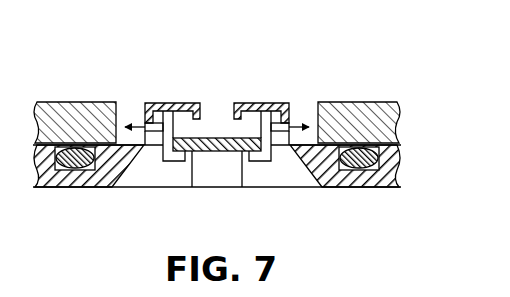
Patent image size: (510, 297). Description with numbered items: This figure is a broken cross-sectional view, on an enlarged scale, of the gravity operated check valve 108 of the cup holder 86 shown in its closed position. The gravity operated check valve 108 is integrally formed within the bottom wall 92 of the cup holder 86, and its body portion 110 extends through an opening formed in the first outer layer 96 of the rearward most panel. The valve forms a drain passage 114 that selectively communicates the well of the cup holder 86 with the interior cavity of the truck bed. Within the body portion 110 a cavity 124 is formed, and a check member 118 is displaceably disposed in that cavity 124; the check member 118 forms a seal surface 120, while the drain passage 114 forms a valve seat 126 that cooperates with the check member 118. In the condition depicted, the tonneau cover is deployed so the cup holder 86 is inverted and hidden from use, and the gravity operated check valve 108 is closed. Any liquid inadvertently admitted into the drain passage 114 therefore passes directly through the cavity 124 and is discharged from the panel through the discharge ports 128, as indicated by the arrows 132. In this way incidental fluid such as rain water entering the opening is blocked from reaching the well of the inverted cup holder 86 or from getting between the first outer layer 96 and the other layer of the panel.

The cup holder 86 is at (410, 88).
The bottom wall 92 is at (403, 174).
The first outer layer 96 is at (404, 123).
The gravity operated check valve 108 is at (124, 208).
The body portion 110 is at (300, 183).
The drain passage 114 is at (236, 110).
The check member 118 is at (205, 152).
The seal surface 120 is at (178, 152).
The cavity 124 is at (255, 110).
The valve seat 126 is at (233, 152).
The discharge ports 128 is at (136, 110).
The arrows 132 is at (140, 118).